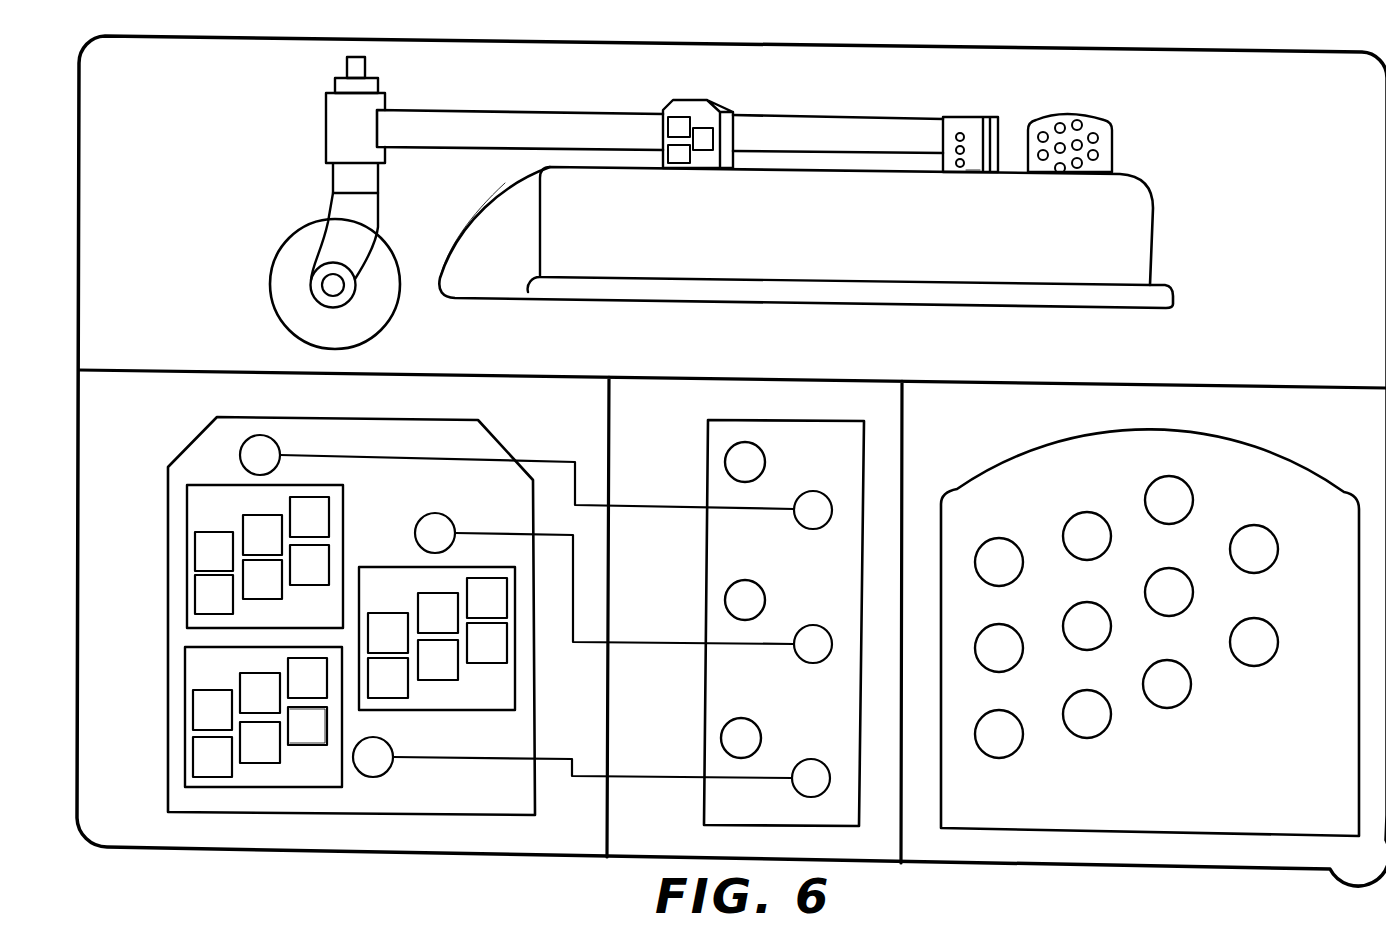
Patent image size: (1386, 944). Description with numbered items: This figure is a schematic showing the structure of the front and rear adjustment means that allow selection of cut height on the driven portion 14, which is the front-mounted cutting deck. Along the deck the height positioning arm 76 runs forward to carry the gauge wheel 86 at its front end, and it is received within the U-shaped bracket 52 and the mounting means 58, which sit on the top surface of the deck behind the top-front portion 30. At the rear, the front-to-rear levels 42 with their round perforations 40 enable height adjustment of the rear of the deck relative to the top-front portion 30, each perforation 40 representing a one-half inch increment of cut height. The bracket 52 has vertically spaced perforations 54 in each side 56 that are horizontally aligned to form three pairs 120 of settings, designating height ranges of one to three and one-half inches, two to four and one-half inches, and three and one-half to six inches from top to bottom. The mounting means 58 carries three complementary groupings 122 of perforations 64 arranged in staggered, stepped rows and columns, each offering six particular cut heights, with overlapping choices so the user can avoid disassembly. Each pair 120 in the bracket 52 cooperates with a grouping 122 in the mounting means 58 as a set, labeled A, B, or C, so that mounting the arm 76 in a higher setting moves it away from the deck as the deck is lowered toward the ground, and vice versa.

The driven portion 14 is at (1146, 229).
The top-front portion 30 is at (598, 167).
The perforations 40 is at (1099, 155).
The front-to-rear levels 42 is at (1097, 125).
The U-shaped bracket 52 is at (947, 117).
The perforations 54 is at (965, 161).
The side 56 is at (973, 165).
The mounting means 58 is at (696, 94).
The perforations 64 is at (300, 745).
The height positioning arm 76 is at (492, 102).
The gauge wheel 86 is at (274, 256).
The pairs of settings 120 is at (725, 465).
The groupings of perforations 122 is at (188, 648).